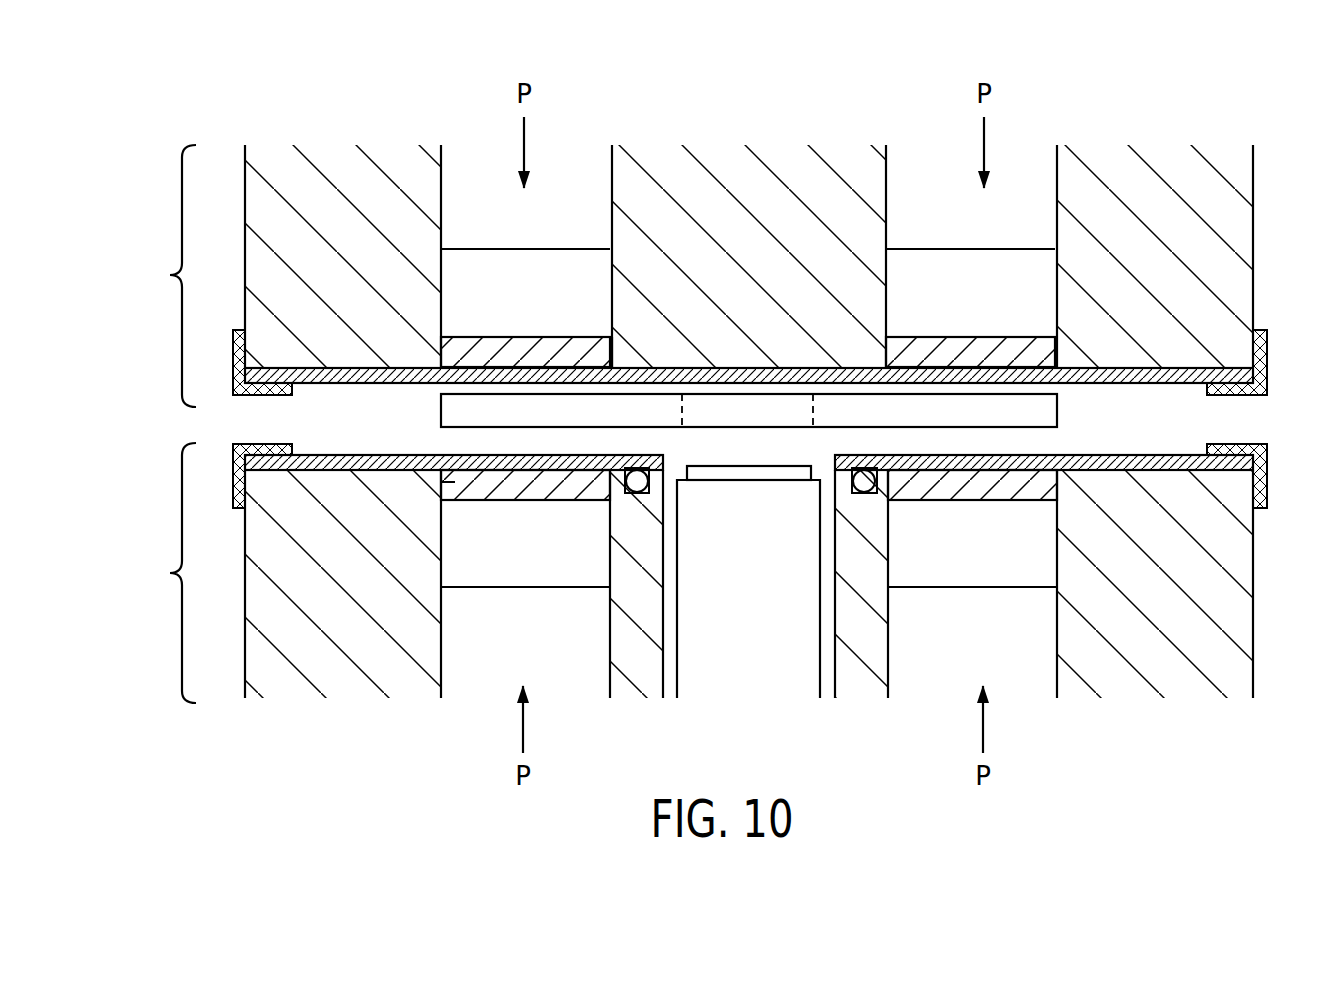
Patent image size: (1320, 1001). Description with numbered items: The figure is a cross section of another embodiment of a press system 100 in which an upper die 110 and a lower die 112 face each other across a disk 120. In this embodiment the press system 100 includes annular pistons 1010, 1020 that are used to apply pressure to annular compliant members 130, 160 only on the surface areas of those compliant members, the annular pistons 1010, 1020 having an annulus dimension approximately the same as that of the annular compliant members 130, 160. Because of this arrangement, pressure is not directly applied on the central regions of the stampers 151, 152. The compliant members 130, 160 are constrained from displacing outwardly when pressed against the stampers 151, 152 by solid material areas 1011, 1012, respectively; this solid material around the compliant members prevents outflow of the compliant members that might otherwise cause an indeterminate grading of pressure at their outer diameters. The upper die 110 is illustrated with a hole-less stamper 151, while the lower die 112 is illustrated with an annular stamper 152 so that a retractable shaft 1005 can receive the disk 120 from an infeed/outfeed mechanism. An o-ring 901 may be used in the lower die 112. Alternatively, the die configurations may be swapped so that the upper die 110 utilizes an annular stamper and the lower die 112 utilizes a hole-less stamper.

The press system 100 is at (366, 110).
The upper die 110 is at (159, 276).
The lower die 112 is at (159, 573).
The disk 120 is at (928, 420).
The annular compliant member 130 is at (613, 352).
The hole-less stamper 151 is at (310, 391).
The annular stamper 152 is at (313, 451).
The annular compliant member 160 is at (455, 482).
The o-ring 901 is at (636, 483).
The retractable shaft 1005 is at (722, 675).
The annular piston 1010 is at (1008, 309).
The solid material area 1011 is at (340, 243).
The solid material area 1012 is at (375, 600).
The annular piston 1020 is at (558, 557).